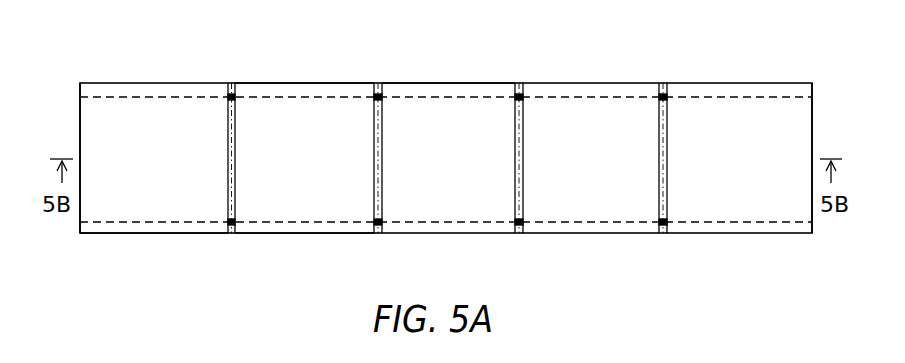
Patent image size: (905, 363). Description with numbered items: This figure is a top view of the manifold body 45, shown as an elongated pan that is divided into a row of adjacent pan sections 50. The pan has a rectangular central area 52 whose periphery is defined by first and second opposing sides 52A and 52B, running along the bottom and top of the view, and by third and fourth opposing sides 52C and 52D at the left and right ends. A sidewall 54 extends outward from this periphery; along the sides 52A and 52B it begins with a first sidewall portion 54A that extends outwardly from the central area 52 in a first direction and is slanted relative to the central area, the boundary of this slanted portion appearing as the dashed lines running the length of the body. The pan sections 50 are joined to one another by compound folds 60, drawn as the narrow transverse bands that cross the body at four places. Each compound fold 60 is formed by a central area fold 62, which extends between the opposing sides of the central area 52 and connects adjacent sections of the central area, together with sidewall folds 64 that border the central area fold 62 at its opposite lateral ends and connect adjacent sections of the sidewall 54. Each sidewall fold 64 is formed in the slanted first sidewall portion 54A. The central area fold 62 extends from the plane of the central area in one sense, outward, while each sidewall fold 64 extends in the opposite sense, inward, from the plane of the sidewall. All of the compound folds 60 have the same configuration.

The manifold body 45 is at (129, 36).
The pan section 50 is at (129, 130).
The central area 52 is at (172, 212).
The first side 52A is at (112, 224).
The second side 52B is at (165, 96).
The third side 52C is at (80, 128).
The fourth side 52D is at (813, 106).
The sidewall 54 is at (310, 92).
The first sidewall portion 54A is at (442, 92).
The compound fold 60 is at (521, 190).
The central area fold 62 is at (665, 105).
The sidewall fold 64 is at (518, 85).